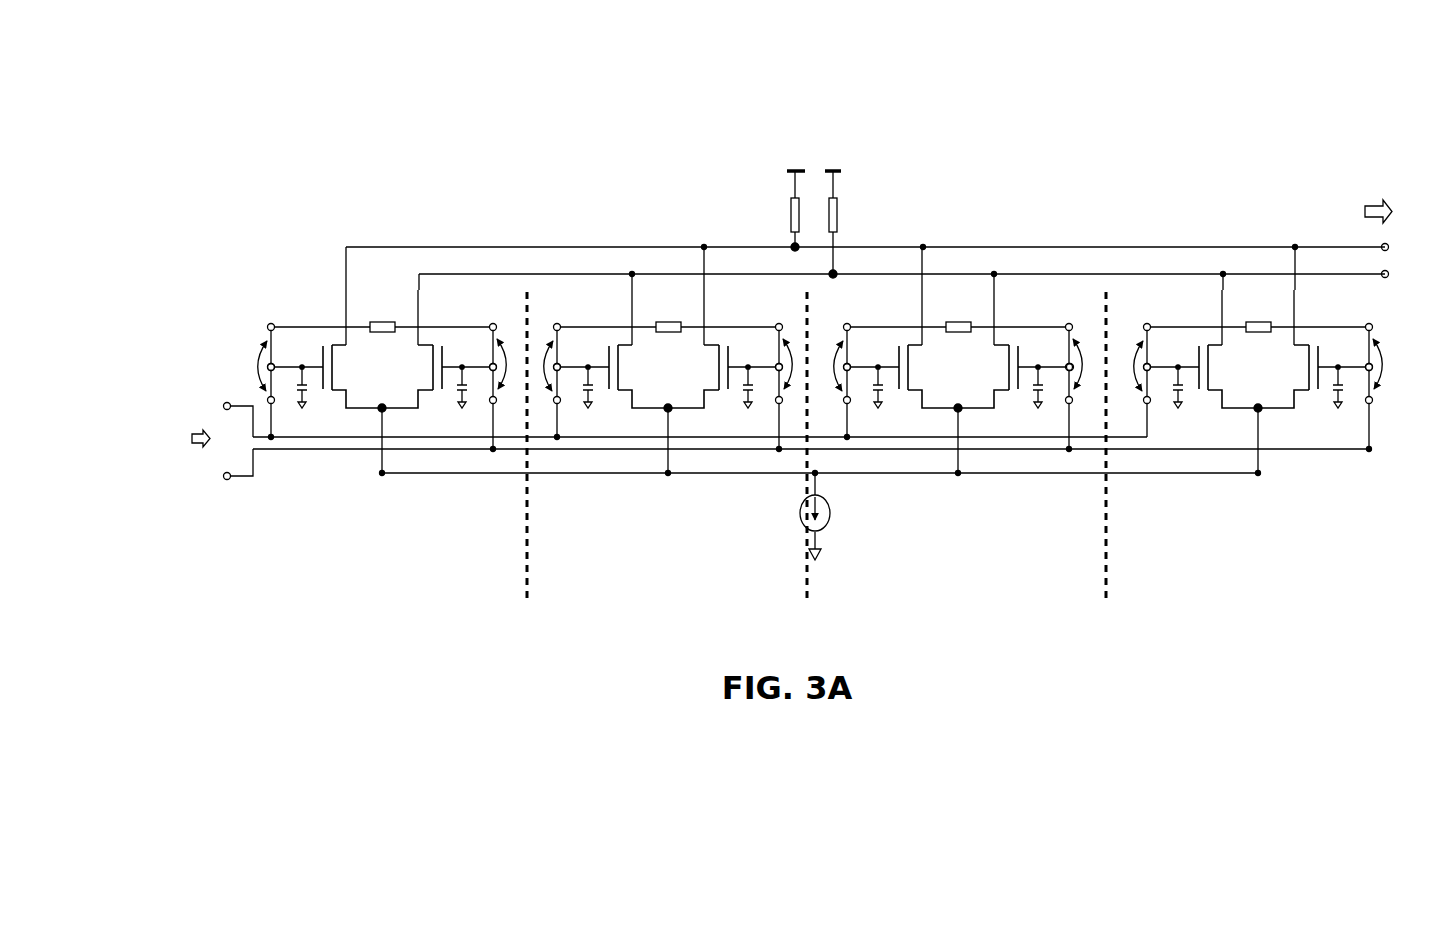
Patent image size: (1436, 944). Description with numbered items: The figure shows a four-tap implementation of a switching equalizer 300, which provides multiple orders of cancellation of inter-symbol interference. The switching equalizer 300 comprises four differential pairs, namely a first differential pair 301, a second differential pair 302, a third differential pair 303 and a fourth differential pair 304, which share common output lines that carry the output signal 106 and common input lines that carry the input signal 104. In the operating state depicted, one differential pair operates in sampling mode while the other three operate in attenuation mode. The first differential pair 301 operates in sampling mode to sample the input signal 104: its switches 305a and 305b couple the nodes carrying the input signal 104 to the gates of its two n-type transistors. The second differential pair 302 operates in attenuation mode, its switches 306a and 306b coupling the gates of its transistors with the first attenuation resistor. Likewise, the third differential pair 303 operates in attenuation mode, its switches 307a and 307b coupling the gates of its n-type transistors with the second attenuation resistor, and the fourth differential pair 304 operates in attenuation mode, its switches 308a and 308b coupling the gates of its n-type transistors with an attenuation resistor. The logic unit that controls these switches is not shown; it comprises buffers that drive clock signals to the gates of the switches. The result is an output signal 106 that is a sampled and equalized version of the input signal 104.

The switching equalizer 300 is at (804, 39).
The first differential pair 301 is at (370, 424).
The second differential pair 302 is at (656, 417).
The third differential pair 303 is at (946, 427).
The fourth differential pair 304 is at (1246, 426).
The switch 305a is at (250, 357).
The switch 305b is at (497, 367).
The switch 306a is at (561, 367).
The switch 306b is at (783, 367).
The switch 307a is at (851, 367).
The switch 307b is at (1074, 367).
The switch 308a is at (1151, 367).
The switch 308b is at (1372, 366).
The input signal 104 is at (207, 444).
The output signal 106 is at (1377, 263).